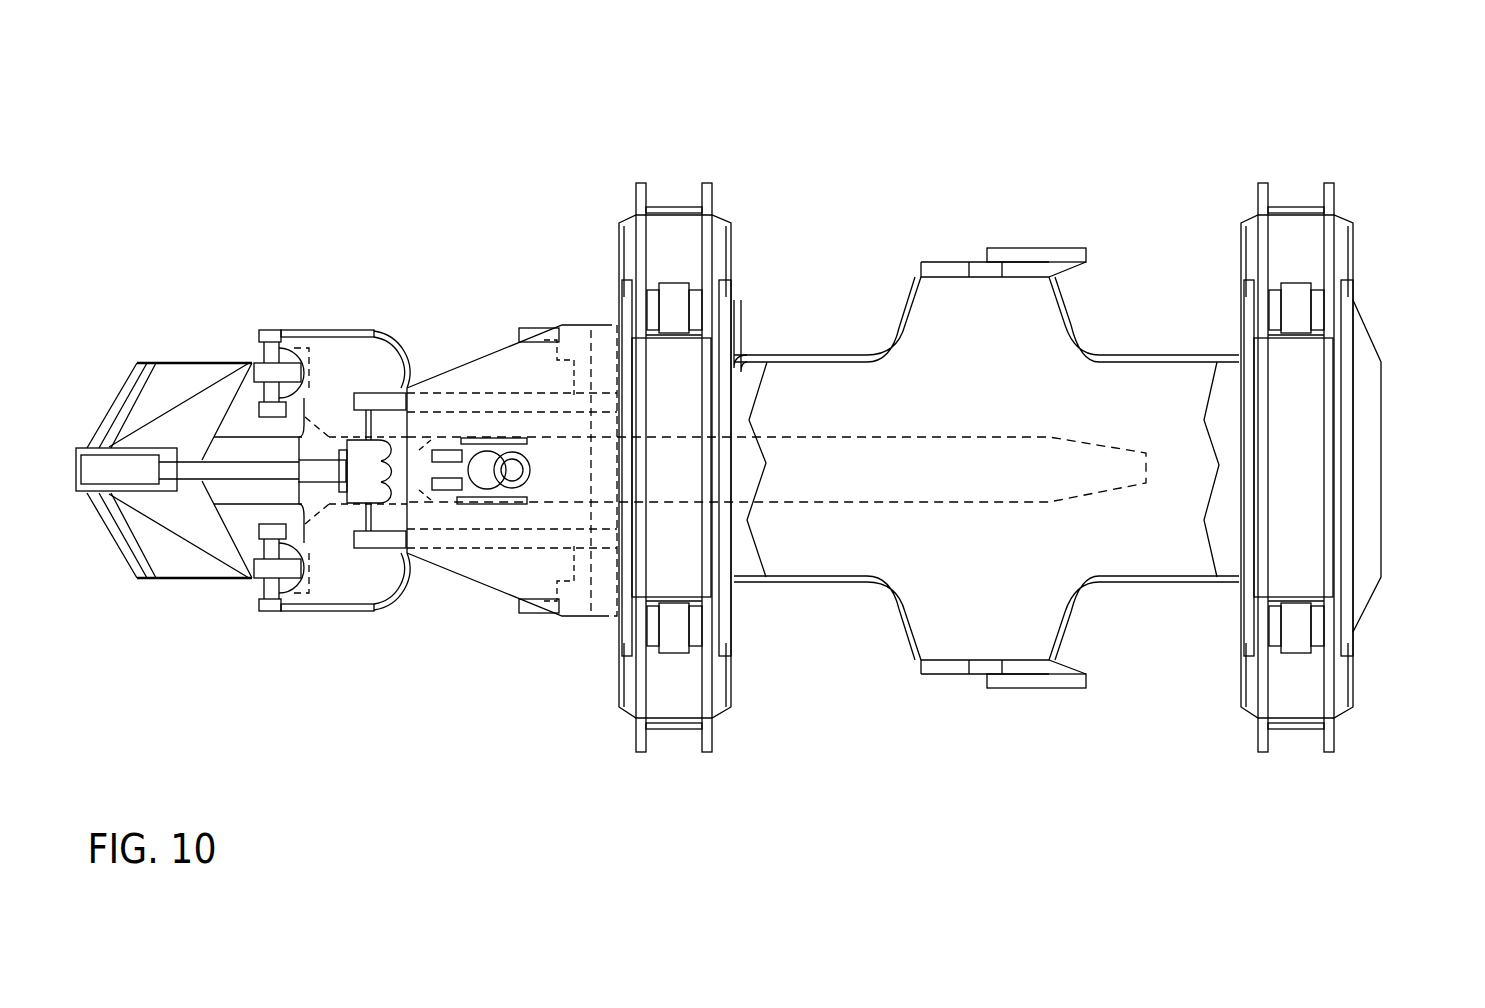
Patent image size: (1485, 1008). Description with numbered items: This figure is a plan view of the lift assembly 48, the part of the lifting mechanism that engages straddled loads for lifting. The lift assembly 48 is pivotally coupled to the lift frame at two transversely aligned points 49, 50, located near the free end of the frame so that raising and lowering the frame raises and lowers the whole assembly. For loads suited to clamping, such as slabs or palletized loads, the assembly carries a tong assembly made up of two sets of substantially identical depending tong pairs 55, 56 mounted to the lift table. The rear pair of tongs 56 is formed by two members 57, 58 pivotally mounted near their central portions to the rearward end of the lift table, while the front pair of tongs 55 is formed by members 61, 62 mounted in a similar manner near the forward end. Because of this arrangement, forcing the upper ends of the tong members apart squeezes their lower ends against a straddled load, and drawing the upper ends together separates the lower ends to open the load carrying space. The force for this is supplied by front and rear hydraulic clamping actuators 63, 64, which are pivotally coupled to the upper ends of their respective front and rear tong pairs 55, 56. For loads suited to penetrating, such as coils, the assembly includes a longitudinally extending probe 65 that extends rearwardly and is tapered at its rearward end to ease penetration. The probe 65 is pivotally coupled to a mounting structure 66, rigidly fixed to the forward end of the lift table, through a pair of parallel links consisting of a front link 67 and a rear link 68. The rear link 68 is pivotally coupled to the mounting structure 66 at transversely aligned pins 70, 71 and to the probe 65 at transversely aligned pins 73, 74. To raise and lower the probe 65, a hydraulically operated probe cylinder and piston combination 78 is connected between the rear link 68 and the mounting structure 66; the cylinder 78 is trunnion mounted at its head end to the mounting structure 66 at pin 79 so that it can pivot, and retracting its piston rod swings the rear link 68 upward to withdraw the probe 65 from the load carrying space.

The lift assembly 48 is at (892, 170).
The pivot point 49 is at (952, 648).
The pivot point 50 is at (958, 300).
The front tong pair 55 is at (620, 262).
The rear tong pair 56 is at (1355, 262).
The tong member 57 is at (1340, 695).
The tong member 58 is at (1352, 243).
The tong member 61 is at (715, 688).
The tong member 62 is at (728, 240).
The front hydraulic clamping actuator 63 is at (683, 378).
The rear hydraulic clamping actuator 64 is at (1312, 408).
The probe 65 is at (940, 448).
The mounting structure 66 is at (409, 378).
The front link 67 is at (190, 470).
The rear link 68 is at (362, 585).
The pin 70 is at (548, 612).
The pin 71 is at (548, 318).
The pin 73 is at (268, 605).
The pin 74 is at (272, 333).
The probe cylinder and piston combination 78 is at (514, 484).
The pin 79 is at (488, 493).